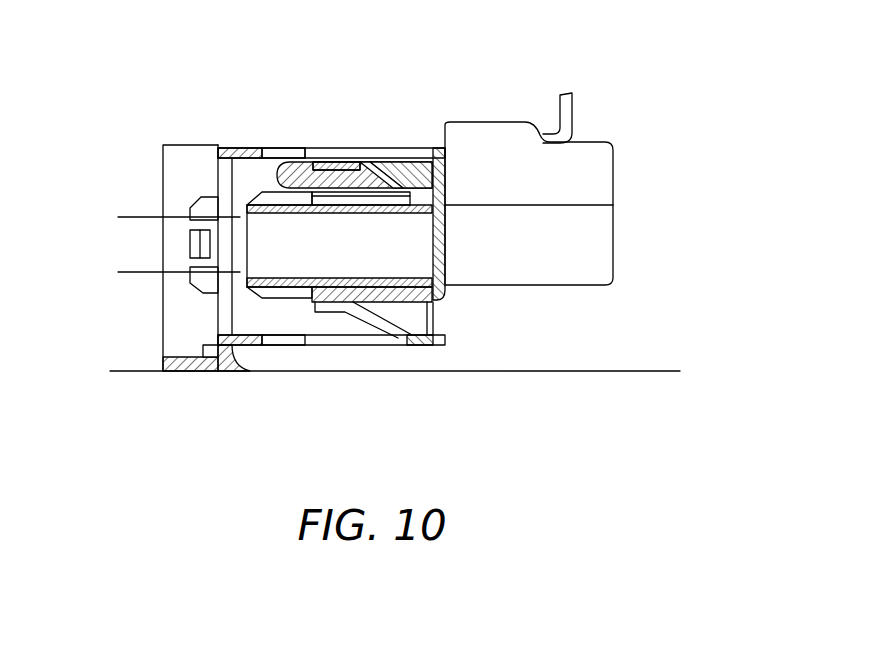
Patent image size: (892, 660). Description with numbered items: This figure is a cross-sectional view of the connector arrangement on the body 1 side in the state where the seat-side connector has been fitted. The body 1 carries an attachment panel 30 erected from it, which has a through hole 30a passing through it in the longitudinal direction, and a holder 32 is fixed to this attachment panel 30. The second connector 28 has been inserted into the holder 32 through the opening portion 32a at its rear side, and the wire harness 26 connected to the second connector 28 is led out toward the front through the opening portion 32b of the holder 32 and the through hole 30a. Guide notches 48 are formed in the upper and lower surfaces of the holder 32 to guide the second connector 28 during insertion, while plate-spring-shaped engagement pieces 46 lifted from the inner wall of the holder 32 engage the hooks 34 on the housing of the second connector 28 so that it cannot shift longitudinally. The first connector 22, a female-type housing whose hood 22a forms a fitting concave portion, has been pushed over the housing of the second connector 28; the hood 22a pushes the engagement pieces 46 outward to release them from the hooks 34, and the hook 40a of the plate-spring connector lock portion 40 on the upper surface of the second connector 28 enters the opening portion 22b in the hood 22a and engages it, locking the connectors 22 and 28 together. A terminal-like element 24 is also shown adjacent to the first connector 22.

The body 1 is at (651, 370).
The first connector 22 is at (632, 288).
The hood 22a is at (338, 158).
The opening portion 22b is at (420, 158).
The terminal 24 is at (572, 117).
The wire harness 26 is at (128, 274).
The second connector 28 is at (245, 191).
The attachment panel 30 is at (188, 155).
The through hole 30a is at (222, 320).
The holder 32 is at (225, 133).
The opening portion 32a is at (435, 323).
The opening portion 32b is at (245, 340).
The hook 34 is at (265, 195).
The connector lock portion 40 is at (393, 158).
The hook 40a is at (362, 158).
The engagement piece 46 is at (367, 322).
The guide notch 48 is at (287, 148).